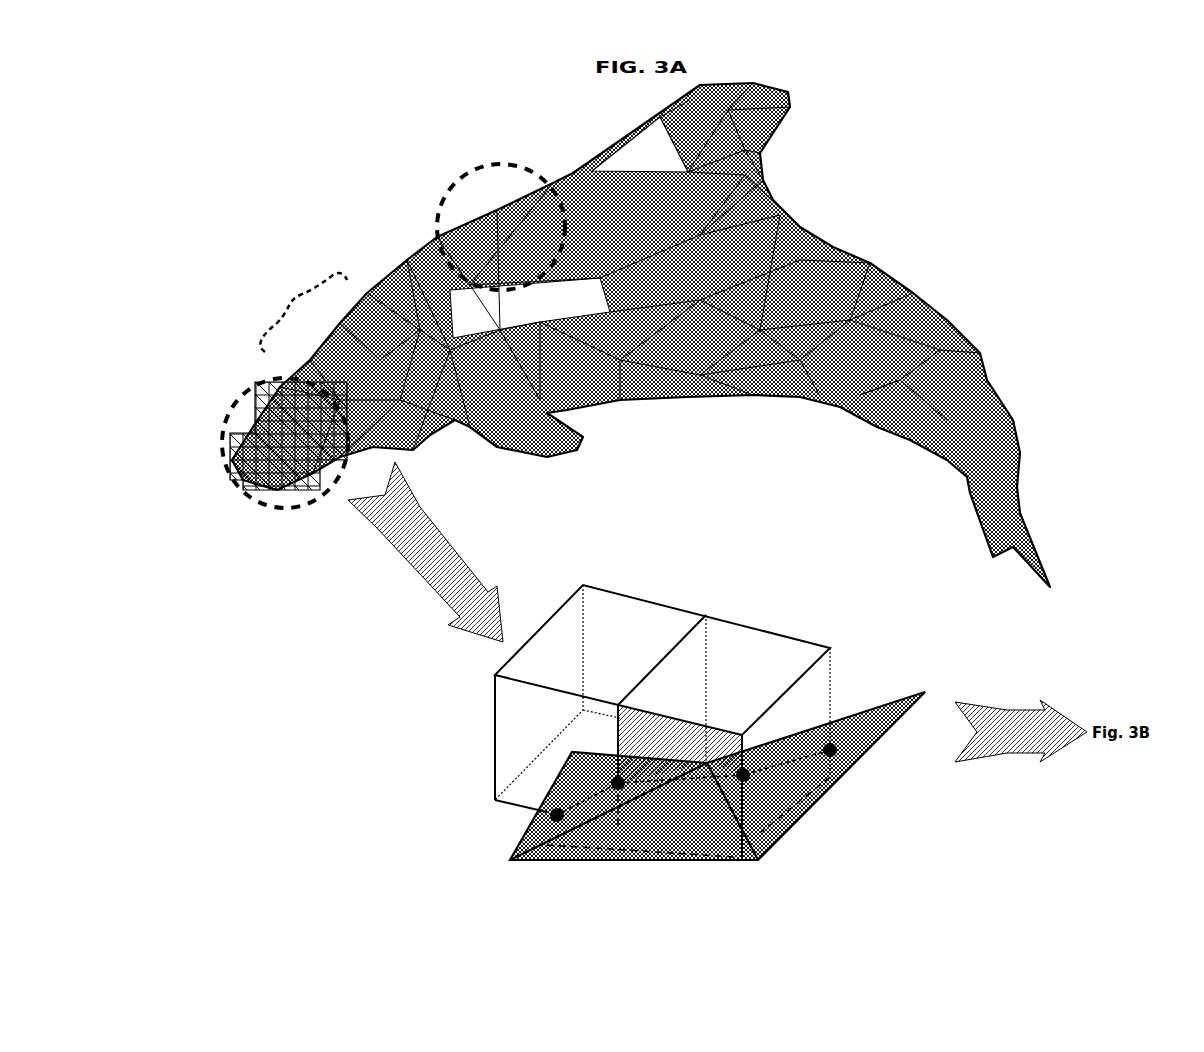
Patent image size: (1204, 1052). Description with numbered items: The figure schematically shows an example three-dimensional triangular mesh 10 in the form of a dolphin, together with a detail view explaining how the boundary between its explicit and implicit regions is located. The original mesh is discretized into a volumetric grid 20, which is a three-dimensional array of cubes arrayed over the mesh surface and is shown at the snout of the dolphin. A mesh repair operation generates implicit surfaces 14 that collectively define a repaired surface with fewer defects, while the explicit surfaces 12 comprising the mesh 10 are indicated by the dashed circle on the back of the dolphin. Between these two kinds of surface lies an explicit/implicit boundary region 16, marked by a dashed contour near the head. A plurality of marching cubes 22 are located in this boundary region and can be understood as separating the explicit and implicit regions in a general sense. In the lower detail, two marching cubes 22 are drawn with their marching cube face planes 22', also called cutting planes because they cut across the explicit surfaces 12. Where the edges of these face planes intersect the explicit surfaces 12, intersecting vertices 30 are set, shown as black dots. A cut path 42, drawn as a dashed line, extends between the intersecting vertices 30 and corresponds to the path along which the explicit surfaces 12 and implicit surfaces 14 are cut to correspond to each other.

The three-dimensional triangular mesh 10 is at (873, 268).
The explicit surfaces 12 is at (563, 846).
The implicit surfaces 14 is at (248, 490).
The explicit/implicit boundary region 16 is at (290, 295).
The volumetric grid 20 is at (273, 407).
The marching cubes 22 is at (662, 680).
The marching cube face planes 22' is at (778, 647).
The intersecting vertices 30 is at (877, 789).
The cut path 42 is at (945, 855).